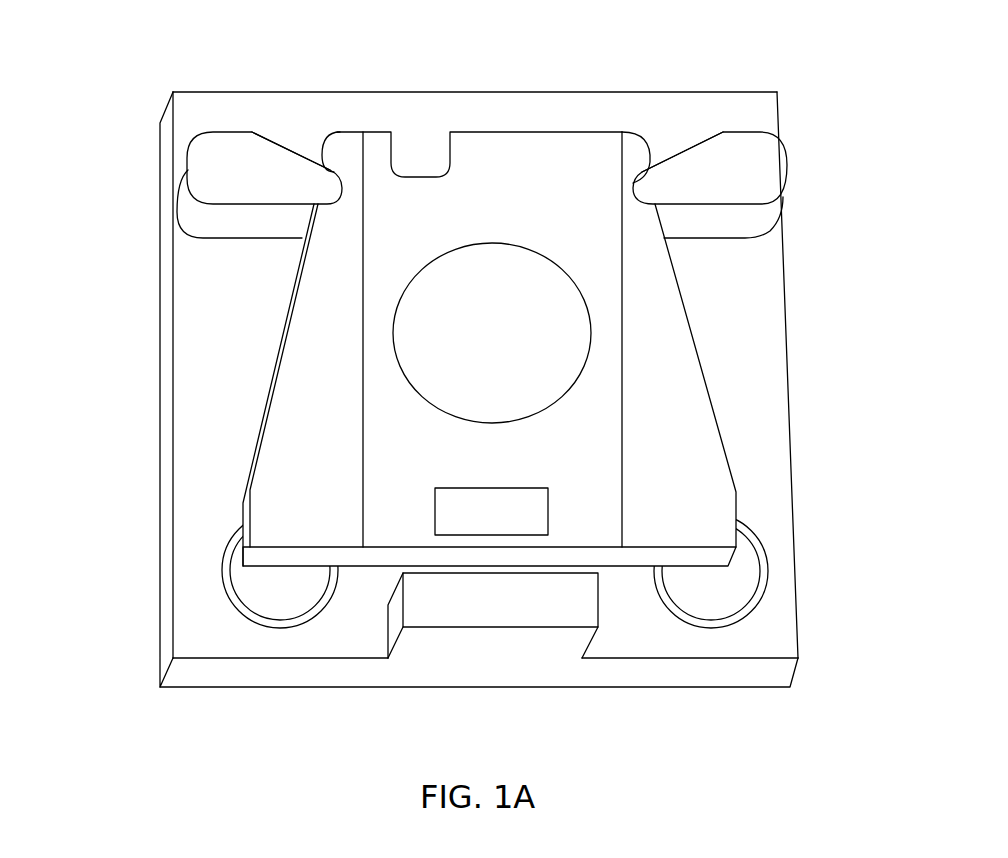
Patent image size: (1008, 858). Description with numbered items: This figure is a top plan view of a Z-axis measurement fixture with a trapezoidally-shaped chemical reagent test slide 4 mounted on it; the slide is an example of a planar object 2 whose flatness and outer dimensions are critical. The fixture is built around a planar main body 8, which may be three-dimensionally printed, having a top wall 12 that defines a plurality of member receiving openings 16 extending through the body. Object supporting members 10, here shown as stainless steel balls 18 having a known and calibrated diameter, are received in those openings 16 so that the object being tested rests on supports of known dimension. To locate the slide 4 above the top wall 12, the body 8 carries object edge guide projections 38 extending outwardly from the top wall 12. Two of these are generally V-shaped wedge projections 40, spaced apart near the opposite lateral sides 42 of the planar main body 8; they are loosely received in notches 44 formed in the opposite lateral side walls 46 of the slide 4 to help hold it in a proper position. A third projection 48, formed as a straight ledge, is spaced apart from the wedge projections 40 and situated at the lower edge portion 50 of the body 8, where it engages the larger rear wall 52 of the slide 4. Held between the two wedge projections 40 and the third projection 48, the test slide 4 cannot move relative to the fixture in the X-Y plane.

The planar object 2 is at (350, 143).
The chemical reagent test slide 4 is at (538, 143).
The planar main body 8 is at (677, 677).
The object supporting member 10 is at (728, 595).
The top wall 12 is at (740, 390).
The member receiving opening 16 is at (768, 546).
The stainless steel ball 18 is at (247, 587).
The object edge guide projection 38 is at (210, 143).
The wedge projection 40 is at (282, 138).
The lateral side 42 is at (172, 350).
The notch 44 is at (340, 167).
The lateral side wall 46 is at (252, 453).
The third projection 48 is at (410, 628).
The lower edge portion 50 is at (588, 673).
The rear wall 52 is at (353, 567).